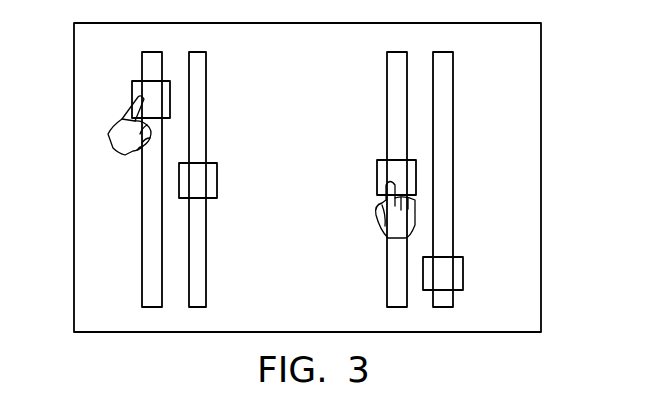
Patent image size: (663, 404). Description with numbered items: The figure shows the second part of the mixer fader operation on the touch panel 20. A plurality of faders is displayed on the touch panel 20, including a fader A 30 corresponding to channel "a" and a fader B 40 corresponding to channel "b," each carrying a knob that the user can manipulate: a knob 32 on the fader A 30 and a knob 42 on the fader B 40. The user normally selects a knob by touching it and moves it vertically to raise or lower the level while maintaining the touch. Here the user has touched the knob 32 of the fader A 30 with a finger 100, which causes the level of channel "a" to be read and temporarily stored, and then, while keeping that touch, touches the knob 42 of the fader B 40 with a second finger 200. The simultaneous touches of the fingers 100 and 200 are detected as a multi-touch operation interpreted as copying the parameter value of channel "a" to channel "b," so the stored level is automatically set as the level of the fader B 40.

The touch panel 20 is at (541, 96).
The fader A 30 is at (142, 257).
The knob 32 is at (132, 81).
The fader B 40 is at (387, 277).
The knob 42 is at (377, 192).
The finger 100 is at (108, 148).
The finger 200 is at (400, 228).